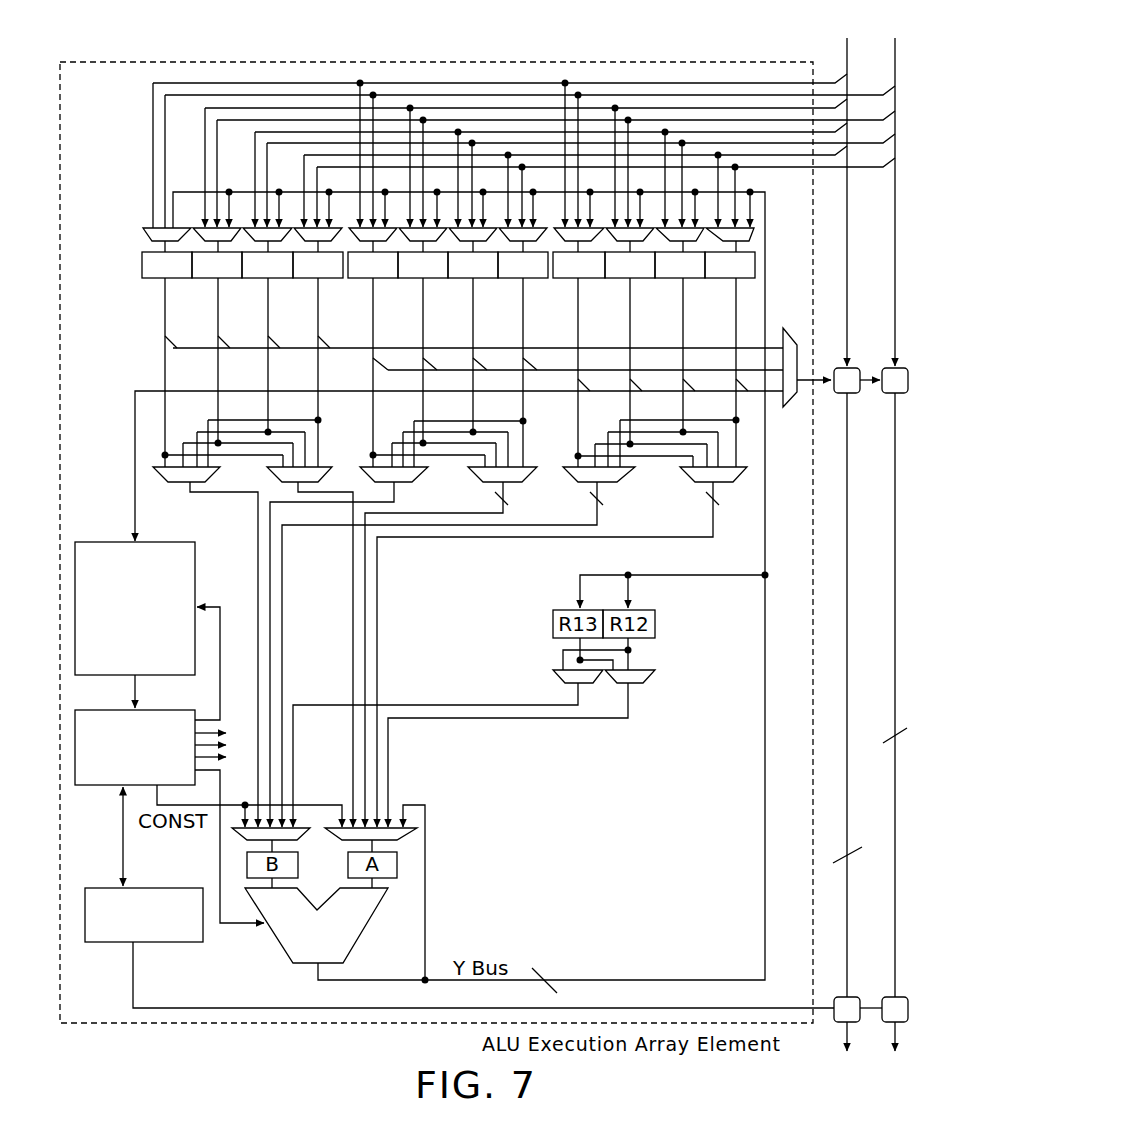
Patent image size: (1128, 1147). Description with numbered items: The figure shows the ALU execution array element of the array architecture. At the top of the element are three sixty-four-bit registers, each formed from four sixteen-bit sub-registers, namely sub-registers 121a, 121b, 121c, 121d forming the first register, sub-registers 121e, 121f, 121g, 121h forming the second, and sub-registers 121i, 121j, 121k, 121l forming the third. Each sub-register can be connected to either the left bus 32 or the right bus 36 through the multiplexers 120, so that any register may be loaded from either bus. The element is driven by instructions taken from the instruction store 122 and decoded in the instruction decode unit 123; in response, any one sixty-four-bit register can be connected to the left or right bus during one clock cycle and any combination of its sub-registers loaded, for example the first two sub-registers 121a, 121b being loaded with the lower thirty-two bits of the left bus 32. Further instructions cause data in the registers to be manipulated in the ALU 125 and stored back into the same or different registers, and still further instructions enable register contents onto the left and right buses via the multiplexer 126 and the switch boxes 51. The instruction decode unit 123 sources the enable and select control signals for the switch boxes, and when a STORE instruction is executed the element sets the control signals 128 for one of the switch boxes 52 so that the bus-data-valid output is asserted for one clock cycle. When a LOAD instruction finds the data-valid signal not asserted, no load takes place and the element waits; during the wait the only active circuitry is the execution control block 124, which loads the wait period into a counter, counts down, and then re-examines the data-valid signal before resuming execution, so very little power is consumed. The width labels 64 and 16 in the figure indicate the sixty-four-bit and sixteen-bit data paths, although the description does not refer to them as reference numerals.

The left bus 32 is at (847, 40).
The right bus 36 is at (895, 40).
The multiplexers 120 is at (147, 229).
The 16-bit sub-register 121a is at (733, 280).
The 16-bit sub-register 121b is at (680, 280).
The 16-bit sub-register 121c is at (627, 280).
The 16-bit sub-register 121d is at (575, 280).
The 16-bit sub-register 121e is at (520, 280).
The 16-bit sub-register 121f is at (470, 280).
The 16-bit sub-register 121g is at (420, 280).
The 16-bit sub-register 121h is at (370, 280).
The 16-bit sub-register 121i is at (315, 280).
The 16-bit sub-register 121j is at (265, 280).
The 16-bit sub-register 121k is at (215, 280).
The 16-bit sub-register 121l is at (140, 280).
The instruction store 122 is at (93, 541).
The instruction decode unit 123 is at (92, 786).
The execution control block 124 is at (105, 943).
The ALU 125 is at (278, 938).
The multiplexer 126 is at (783, 408).
The control signals 128 is at (256, 1010).
The switch box 51 is at (840, 395).
The switch box 52 is at (840, 1023).
The 64-bit bus width marker 64 is at (870, 795).
The 16-bit bus width marker 16 is at (623, 739).